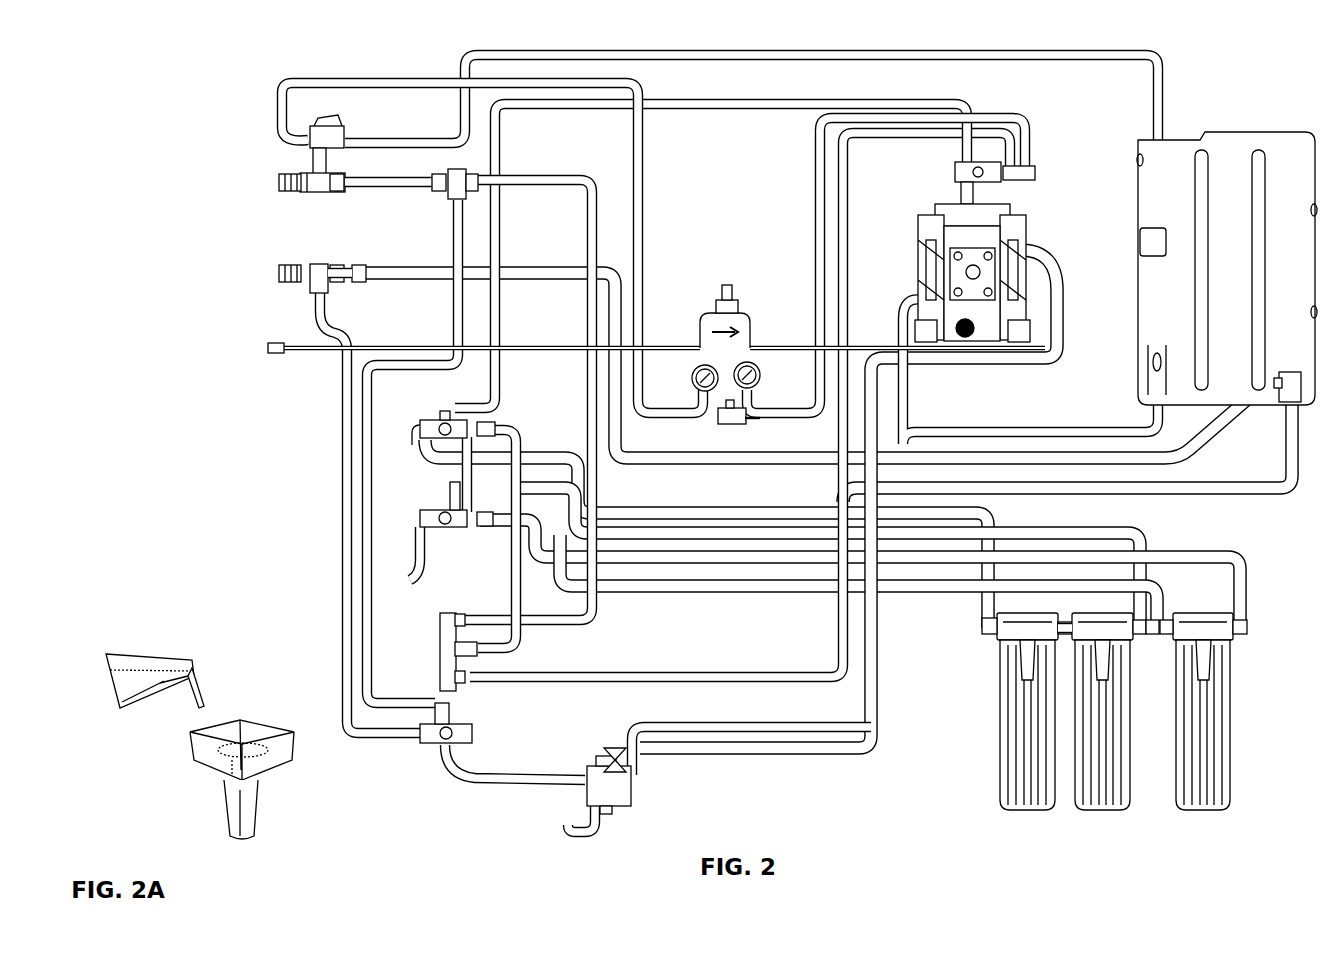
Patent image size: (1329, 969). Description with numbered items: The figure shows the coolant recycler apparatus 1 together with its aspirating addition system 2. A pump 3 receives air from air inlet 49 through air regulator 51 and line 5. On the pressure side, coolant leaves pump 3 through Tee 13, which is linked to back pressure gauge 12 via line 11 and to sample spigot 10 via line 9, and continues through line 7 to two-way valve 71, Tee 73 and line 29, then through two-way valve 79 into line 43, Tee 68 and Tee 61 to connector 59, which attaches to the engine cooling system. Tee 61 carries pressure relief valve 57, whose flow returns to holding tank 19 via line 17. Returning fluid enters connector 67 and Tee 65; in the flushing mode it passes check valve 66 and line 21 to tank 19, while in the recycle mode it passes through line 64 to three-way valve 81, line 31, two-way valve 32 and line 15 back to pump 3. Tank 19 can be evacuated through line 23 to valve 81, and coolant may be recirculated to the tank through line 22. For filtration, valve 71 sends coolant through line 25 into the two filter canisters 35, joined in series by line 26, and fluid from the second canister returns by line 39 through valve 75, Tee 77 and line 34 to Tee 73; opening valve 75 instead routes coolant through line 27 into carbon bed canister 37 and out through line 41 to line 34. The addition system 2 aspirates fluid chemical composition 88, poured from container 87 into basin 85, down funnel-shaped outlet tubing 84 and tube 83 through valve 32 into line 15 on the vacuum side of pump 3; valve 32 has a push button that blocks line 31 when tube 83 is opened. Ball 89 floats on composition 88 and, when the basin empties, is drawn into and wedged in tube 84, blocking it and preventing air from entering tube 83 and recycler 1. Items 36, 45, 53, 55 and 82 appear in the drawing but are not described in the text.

In FIG. 2, the apparatus 1 is at (245, 170).
In FIG. 2A, the addition system 2 is at (155, 548).
In FIG. 2, the pump 3 is at (962, 240).
In FIG. 2, the line 5 is at (1052, 258).
In FIG. 2, the line 7 is at (500, 145).
In FIG. 2, the line 9 is at (1030, 150).
In FIG. 2, the sample spigot 10 is at (722, 416).
In FIG. 2, the line 11 is at (1005, 125).
In FIG. 2, the back pressure gauge 12 is at (760, 376).
In FIG. 2, the Tee 13 is at (960, 170).
In FIG. 2, the line 15 is at (892, 290).
In FIG. 2, the line 17 is at (1162, 108).
In FIG. 2, the holding tank 19 is at (1220, 264).
In FIG. 2, the line 21 is at (527, 278).
In FIG. 2, the line 22 is at (595, 682).
In FIG. 2, the line 23 is at (1130, 430).
In FIG. 2, the line 25 is at (697, 517).
In FIG. 2, the line 26 is at (1065, 622).
In FIG. 2, the line 27 is at (762, 590).
In FIG. 2, the line 29 is at (513, 542).
In FIG. 2, the line 31 is at (523, 780).
In FIG. 2, the two-way valve 32 is at (623, 800).
In FIG. 2, the line 34 is at (510, 440).
In FIG. 2, the filter canisters 35 is at (1025, 765).
In FIG. 2, the valve 36 is at (616, 748).
In FIG. 2, the carbon bed canister 37 is at (1225, 740).
In FIG. 2, the line 39 is at (770, 542).
In FIG. 2, the line 41 is at (660, 555).
In FIG. 2, the line 43 is at (588, 242).
In FIG. 2, the conduit 45 is at (365, 462).
In FIG. 2, the air inlet 49 is at (395, 345).
In FIG. 2, the air regulator 51 is at (728, 300).
In FIG. 2, the pressure gauge 53 is at (692, 380).
In FIG. 2, the conduit 55 is at (378, 84).
In FIG. 2, the pressure relief valve 57 is at (292, 90).
In FIG. 2, the connector 59 is at (286, 192).
In FIG. 2, the Tee 61 is at (322, 190).
In FIG. 2, the line 64 is at (345, 582).
In FIG. 2, the Tee 65 is at (338, 266).
In FIG. 2, the check valve 66 is at (357, 278).
In FIG. 2, the connector 67 is at (272, 282).
In FIG. 2, the Tee 68 is at (458, 175).
In FIG. 2, the two-way valve 71 is at (428, 422).
In FIG. 2, the Tee 73 is at (472, 462).
In FIG. 2, the valve 75 is at (440, 512).
In FIG. 2, the Tee 77 is at (425, 568).
In FIG. 2, the two-way valve 79 is at (445, 642).
In FIG. 2, the three-way valve 81 is at (465, 728).
In FIG. 2, the outlet flow 82 is at (560, 830).
In FIG. 2A, the outlet flow 82 is at (328, 866).
In FIG. 2, the tube 83 is at (583, 826).
In FIG. 2A, the outlet tubing 84 is at (250, 796).
In FIG. 2A, the basin 85 is at (204, 744).
In FIG. 2A, the container 87 is at (120, 660).
In FIG. 2A, the fluid chemical composition 88 is at (108, 694).
In FIG. 2A, the ball 89 is at (228, 764).